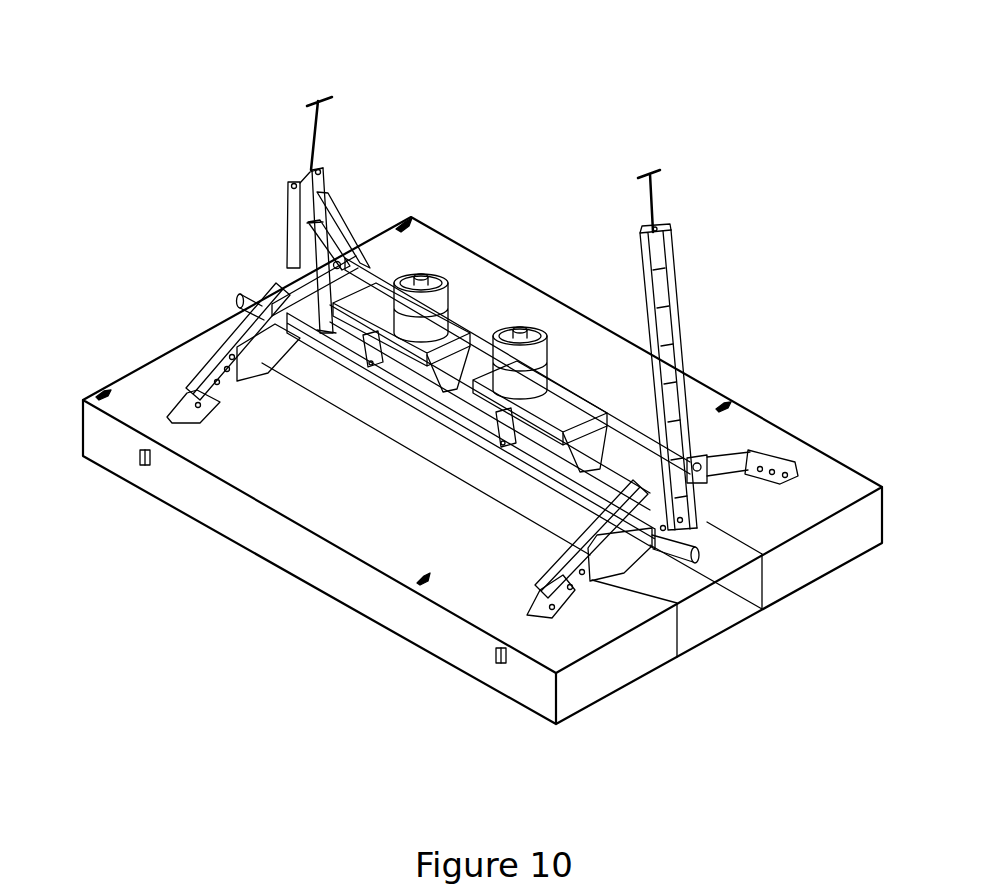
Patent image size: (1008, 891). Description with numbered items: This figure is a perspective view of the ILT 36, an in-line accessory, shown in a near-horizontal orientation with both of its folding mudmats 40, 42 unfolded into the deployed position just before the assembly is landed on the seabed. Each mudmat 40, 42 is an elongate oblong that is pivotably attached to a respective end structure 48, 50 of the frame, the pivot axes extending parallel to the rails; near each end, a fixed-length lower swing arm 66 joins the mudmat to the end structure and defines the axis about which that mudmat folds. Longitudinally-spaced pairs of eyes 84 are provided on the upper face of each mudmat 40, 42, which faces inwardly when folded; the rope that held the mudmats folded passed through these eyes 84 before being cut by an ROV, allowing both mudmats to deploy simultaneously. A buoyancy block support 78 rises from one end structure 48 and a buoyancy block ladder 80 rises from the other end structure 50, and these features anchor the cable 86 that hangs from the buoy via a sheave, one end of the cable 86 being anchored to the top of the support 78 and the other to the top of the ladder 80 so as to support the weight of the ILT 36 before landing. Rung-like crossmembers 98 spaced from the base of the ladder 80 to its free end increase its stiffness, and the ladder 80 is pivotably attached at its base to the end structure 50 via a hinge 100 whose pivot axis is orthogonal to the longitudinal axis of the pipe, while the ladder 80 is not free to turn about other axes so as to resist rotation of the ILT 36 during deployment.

The ILT 36 is at (453, 332).
The mudmat 40 is at (515, 290).
The mudmat 42 is at (497, 470).
The end structure 48 is at (277, 272).
The end structure 50 is at (700, 478).
The lower swing arm 66 is at (275, 357).
The buoyancy block support 78 is at (323, 185).
The buoyancy block ladder 80 is at (676, 300).
The eyes 84 is at (410, 218).
The cable 86 is at (315, 135).
The rung-like crossmembers 98 is at (662, 237).
The hinge 100 is at (640, 578).